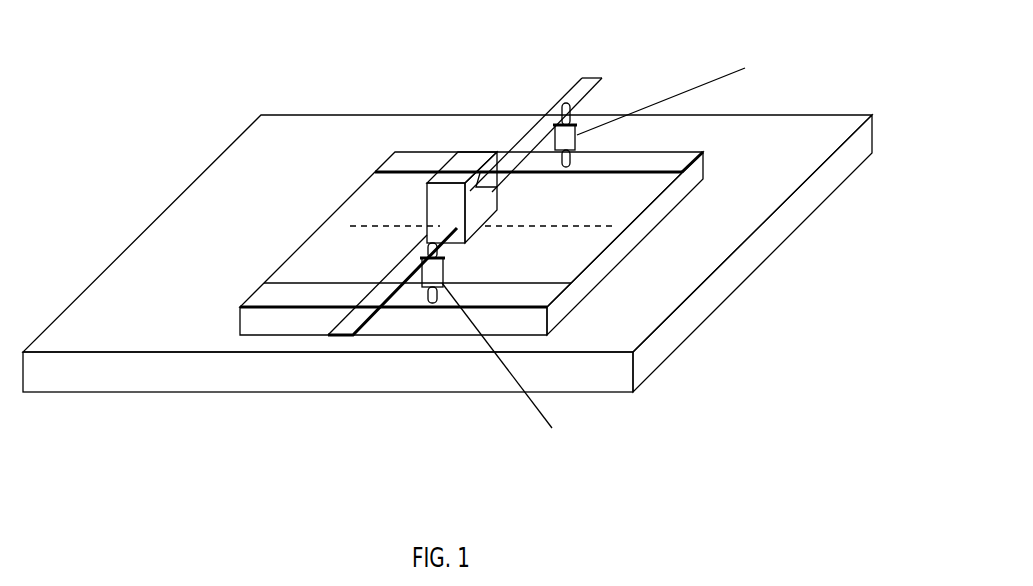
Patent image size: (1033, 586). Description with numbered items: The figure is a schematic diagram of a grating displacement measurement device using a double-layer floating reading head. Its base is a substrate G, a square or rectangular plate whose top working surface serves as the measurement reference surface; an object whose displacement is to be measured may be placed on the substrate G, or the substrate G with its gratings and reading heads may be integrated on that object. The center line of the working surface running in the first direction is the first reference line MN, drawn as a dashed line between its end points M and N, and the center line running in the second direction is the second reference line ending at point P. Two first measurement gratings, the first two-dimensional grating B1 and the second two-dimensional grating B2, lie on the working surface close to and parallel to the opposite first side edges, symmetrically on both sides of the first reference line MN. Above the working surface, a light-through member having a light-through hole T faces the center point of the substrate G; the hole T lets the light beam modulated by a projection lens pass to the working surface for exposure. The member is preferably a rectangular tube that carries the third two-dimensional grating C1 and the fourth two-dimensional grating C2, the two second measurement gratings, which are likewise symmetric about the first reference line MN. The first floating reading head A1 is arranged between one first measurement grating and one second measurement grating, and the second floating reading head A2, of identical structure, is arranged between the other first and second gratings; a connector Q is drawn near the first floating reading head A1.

The substrate G is at (471, 243).
The first two-dimensional grating B1 is at (248, 297).
The second two-dimensional grating B2 is at (389, 159).
The first reference line endpoint M is at (384, 236).
The first reference line endpoint N is at (551, 242).
The light-through hole T is at (440, 205).
The third two-dimensional grating C1 is at (345, 335).
The fourth two-dimensional grating C2 is at (593, 78).
The second reference line endpoint P is at (561, 136).
The second connector Q is at (422, 274).
The first floating reading head A1 is at (504, 378).
The second floating reading head A2 is at (683, 91).